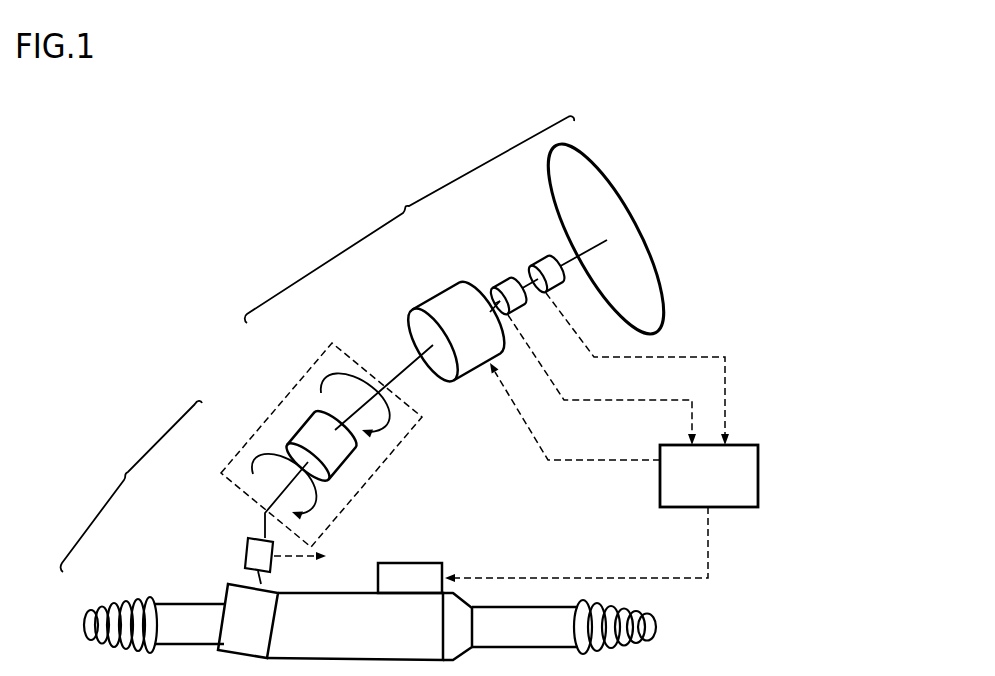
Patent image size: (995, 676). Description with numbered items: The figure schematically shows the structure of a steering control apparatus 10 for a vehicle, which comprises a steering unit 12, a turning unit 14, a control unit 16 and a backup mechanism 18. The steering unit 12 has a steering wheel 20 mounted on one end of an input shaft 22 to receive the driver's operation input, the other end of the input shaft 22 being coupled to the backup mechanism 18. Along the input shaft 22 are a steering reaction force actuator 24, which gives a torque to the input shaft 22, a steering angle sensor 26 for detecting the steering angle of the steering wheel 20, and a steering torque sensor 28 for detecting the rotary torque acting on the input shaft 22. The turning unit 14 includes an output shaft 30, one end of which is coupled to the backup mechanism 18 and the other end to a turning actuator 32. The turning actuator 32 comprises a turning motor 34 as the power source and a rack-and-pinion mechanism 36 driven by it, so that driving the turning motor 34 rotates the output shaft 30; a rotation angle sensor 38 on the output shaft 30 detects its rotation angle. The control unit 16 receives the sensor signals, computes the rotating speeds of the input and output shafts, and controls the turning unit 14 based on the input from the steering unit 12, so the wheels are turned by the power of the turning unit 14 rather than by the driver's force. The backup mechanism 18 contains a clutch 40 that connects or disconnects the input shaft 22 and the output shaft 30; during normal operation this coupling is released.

The steering control apparatus 10 is at (100, 180).
The steering unit 12 is at (409, 219).
The turning unit 14 is at (131, 486).
The control unit 16 is at (759, 474).
The backup mechanism 18 is at (280, 405).
The steering wheel 20 is at (668, 303).
The input shaft 22 is at (395, 367).
The steering reaction force actuator 24 is at (451, 283).
The steering angle sensor 26 is at (504, 281).
The steering torque sensor 28 is at (544, 257).
The output shaft 30 is at (264, 517).
The turning actuator 32 is at (513, 507).
The turning motor 34 is at (432, 563).
The rack-and-pinion mechanism 36 is at (362, 592).
The rotation angle sensor 38 is at (246, 552).
The clutch 40 is at (352, 460).